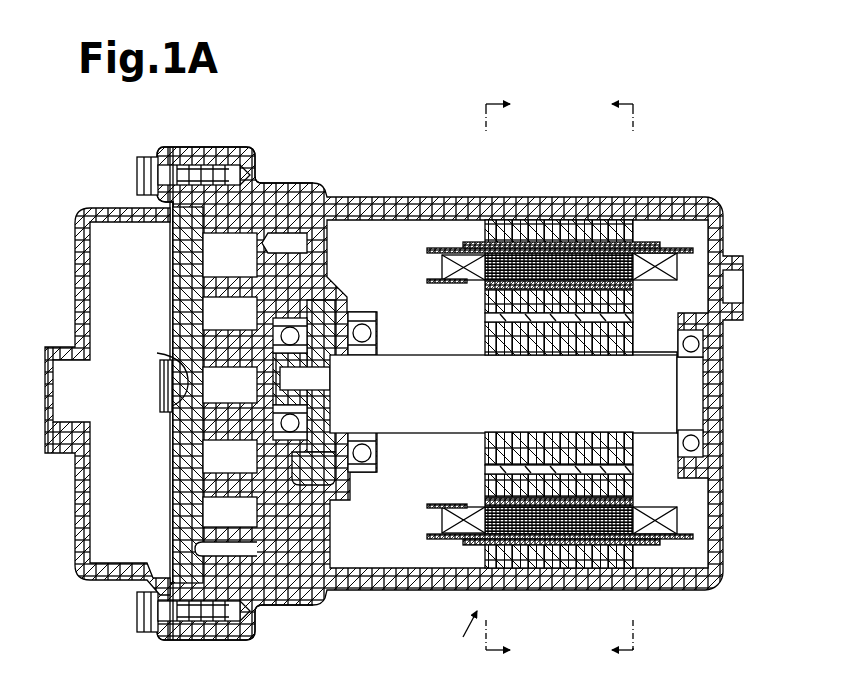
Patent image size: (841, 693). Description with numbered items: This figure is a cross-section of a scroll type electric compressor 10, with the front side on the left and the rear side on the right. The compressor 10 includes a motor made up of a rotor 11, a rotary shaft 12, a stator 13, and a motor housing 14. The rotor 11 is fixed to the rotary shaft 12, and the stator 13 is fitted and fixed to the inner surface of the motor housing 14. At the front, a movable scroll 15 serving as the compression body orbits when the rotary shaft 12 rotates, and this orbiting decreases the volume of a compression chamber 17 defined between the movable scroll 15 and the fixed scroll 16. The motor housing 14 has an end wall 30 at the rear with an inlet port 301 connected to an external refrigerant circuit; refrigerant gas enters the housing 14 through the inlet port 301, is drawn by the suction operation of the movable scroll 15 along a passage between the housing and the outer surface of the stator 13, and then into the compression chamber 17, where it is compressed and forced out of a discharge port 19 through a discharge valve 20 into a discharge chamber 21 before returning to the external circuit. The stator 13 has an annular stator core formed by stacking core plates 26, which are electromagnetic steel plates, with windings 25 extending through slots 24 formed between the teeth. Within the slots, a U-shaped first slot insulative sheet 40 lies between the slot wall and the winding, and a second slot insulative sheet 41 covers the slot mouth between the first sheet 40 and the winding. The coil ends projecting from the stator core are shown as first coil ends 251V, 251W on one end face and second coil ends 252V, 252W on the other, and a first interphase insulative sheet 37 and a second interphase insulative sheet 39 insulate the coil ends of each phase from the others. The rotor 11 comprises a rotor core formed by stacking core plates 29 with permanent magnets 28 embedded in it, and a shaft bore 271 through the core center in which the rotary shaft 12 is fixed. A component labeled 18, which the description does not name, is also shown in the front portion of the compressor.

The electric compressor 10 is at (128, 151).
The rotor 11 is at (526, 393).
The rotary shaft 12 is at (400, 428).
The stator 13 is at (581, 368).
The motor housing 14 is at (388, 582).
The movable scroll 15 is at (288, 513).
The fixed scroll 16 is at (173, 253).
The compression chamber 17 is at (245, 326).
The retainer 18 is at (300, 544).
The discharge port 19 is at (165, 395).
The discharge valve 20 is at (170, 373).
The discharge chamber 21 is at (144, 521).
The slots 24 is at (622, 247).
The windings 25 is at (522, 248).
The core plates 26 is at (592, 245).
The permanent magnets 28 is at (492, 320).
The core plates 29 is at (493, 312).
The end wall 30 is at (720, 489).
The first interphase insulative sheet 37 is at (430, 249).
The second interphase insulative sheet 39 is at (428, 281).
The first slot insulative sheet 40 is at (463, 242).
The second slot insulative sheet 41 is at (634, 284).
The first coil end 251V is at (442, 267).
The first coil end 251W is at (442, 515).
The second coil end 252V is at (672, 268).
The second coil end 252W is at (672, 525).
The shaft bore 271 is at (615, 360).
The inlet port 301 is at (741, 290).